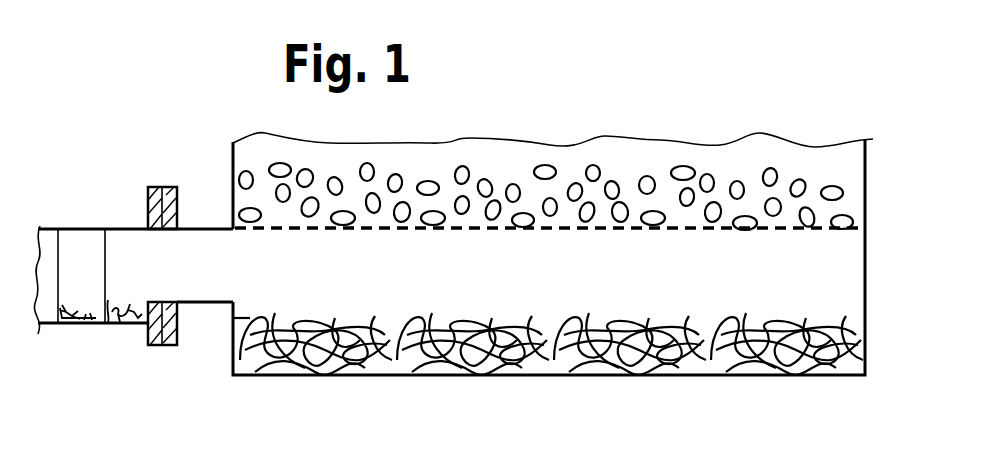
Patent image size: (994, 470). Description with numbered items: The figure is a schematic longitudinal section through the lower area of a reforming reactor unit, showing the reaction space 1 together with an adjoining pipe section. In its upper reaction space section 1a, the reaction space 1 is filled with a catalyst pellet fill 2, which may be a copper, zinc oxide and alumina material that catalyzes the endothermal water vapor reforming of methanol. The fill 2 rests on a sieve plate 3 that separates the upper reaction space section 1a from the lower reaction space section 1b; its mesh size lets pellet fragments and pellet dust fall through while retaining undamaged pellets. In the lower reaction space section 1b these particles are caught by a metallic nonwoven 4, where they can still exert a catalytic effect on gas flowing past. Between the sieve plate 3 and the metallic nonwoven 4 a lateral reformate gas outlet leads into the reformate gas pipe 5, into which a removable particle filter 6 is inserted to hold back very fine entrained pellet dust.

The reaction space 1 is at (865, 178).
The upper reaction space section 1a is at (243, 160).
The lower reaction space section 1b is at (597, 290).
The catalyst pellet fill 2 is at (594, 165).
The sieve plate 3 is at (388, 230).
The metallic nonwoven 4 is at (565, 376).
The reformate gas pipe 5 is at (197, 288).
The particle filter 6 is at (115, 288).